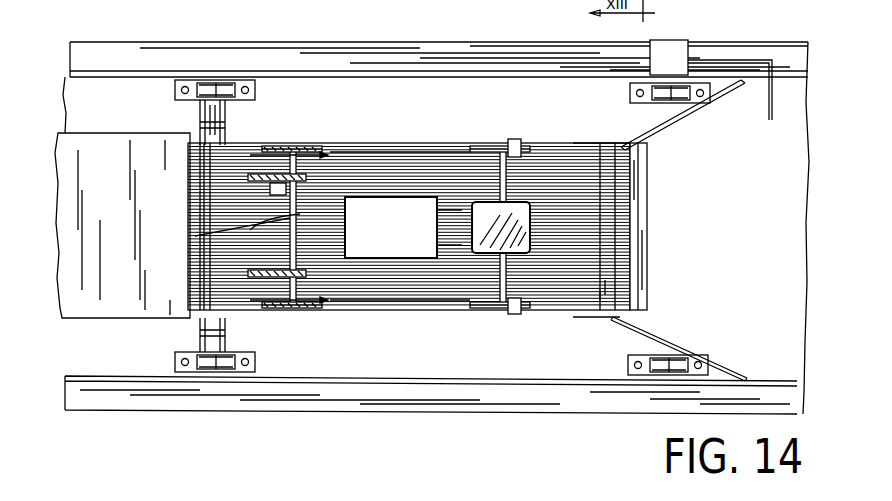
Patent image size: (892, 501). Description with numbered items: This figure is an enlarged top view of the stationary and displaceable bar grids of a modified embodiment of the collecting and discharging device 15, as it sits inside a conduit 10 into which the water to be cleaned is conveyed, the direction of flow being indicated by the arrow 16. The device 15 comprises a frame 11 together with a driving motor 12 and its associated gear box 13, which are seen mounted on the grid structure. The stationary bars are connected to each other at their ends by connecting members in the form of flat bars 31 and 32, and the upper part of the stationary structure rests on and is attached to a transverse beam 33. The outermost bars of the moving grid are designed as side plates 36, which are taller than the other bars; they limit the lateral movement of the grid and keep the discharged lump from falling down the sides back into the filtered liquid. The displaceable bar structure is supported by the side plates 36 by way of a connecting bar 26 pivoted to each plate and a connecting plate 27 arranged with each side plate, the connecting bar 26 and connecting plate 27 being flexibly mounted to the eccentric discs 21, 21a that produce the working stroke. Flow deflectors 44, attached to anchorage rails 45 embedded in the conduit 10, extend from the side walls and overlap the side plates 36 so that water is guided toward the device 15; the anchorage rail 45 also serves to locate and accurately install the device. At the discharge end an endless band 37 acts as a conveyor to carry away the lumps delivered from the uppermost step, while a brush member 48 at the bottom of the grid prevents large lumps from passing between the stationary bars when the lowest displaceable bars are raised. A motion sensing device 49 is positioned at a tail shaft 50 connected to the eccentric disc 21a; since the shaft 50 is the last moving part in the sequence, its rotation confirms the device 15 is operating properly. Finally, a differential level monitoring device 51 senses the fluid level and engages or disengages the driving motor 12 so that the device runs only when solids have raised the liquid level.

The conduit 10 is at (110, 50).
The frame 11 is at (195, 101).
The driving motor 12 is at (415, 198).
The gear box 13 is at (482, 254).
The collecting and discharging device 15 is at (608, 210).
The arrow indicating flow of water 16 is at (717, 231).
The eccentric disc 21 is at (492, 146).
The eccentric disc 21a is at (288, 144).
The connecting bar 26 is at (519, 140).
The connecting plate 27 is at (314, 144).
The flat bar 31 is at (225, 112).
The flat bar 32 is at (610, 320).
The transverse beam 33 is at (198, 320).
The side plate 36 is at (372, 144).
The endless band 37 is at (149, 160).
The flow deflector 44 is at (689, 110).
The anchorage rail 45 is at (754, 58).
The brush member 48 is at (642, 298).
The motion sensing device 49 is at (270, 190).
The tail shaft 50 is at (197, 234).
The differential level monitoring device 51 is at (672, 46).